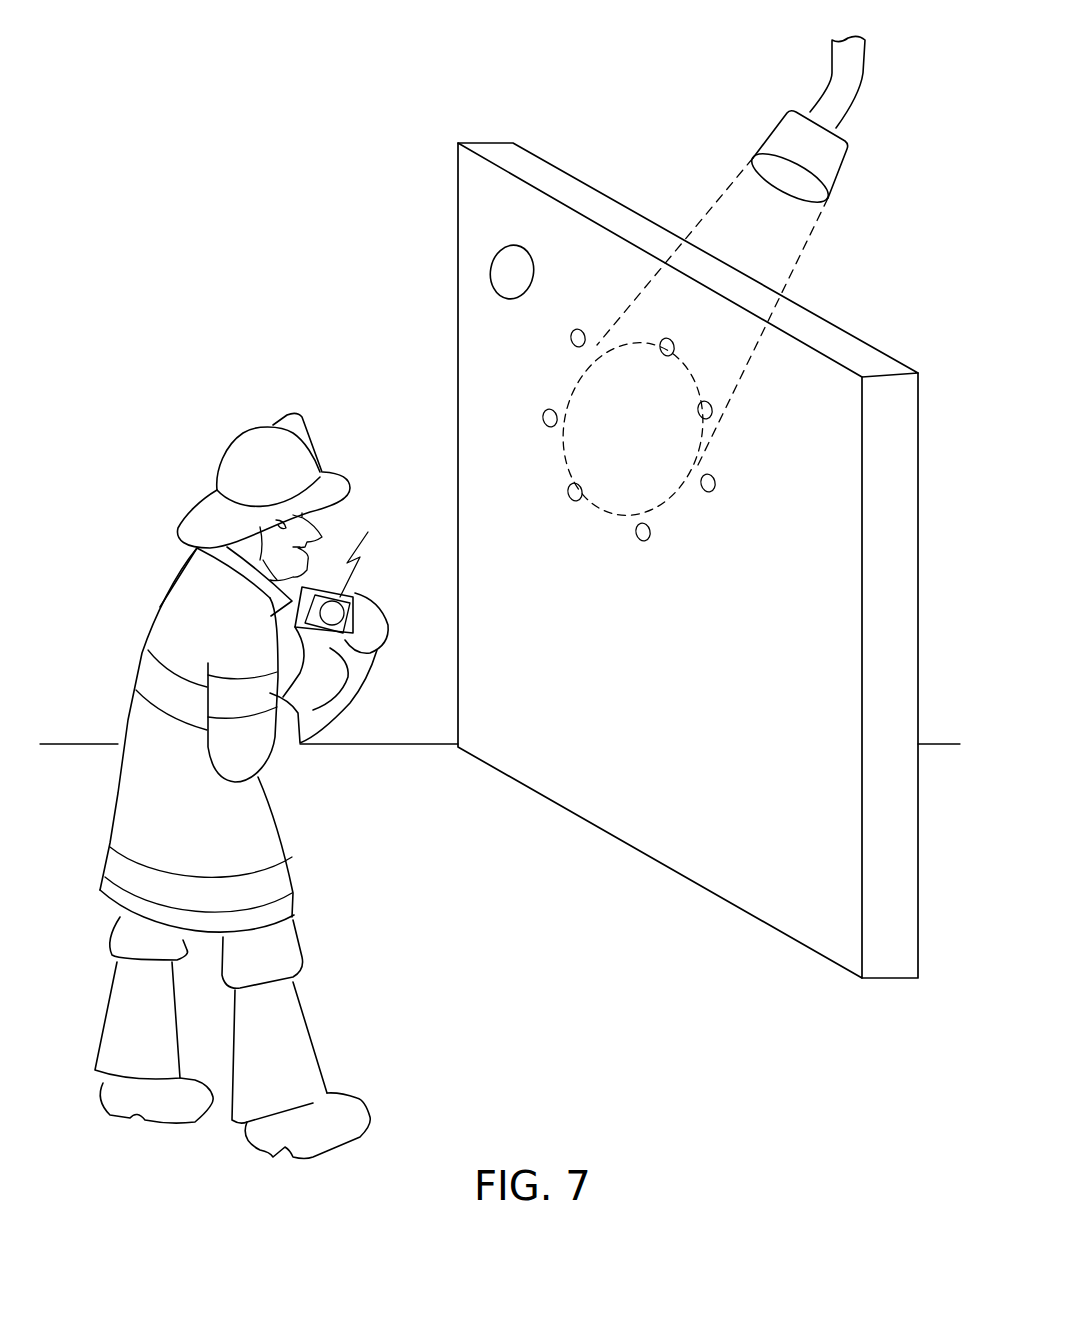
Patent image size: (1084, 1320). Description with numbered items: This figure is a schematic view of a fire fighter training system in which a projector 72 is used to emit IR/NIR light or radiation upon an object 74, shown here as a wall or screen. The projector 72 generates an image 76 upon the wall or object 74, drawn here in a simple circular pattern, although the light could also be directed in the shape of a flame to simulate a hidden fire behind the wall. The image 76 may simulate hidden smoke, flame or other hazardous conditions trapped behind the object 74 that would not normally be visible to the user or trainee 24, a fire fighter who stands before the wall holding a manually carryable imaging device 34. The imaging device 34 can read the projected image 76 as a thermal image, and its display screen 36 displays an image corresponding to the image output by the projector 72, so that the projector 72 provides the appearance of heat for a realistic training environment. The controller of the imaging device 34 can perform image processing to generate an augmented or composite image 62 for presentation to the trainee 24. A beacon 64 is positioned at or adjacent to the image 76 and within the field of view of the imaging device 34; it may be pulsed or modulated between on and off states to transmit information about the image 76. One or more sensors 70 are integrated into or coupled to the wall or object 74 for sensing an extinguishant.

The user/trainee 24 is at (128, 830).
The imaging device 34 is at (370, 633).
The display screen 36 is at (365, 597).
The augmented/composite image 62 is at (367, 551).
The beacon 64 is at (505, 277).
The sensor 70 is at (552, 428).
The projector 72 is at (822, 160).
The object 74 is at (873, 349).
The image 76 is at (672, 498).